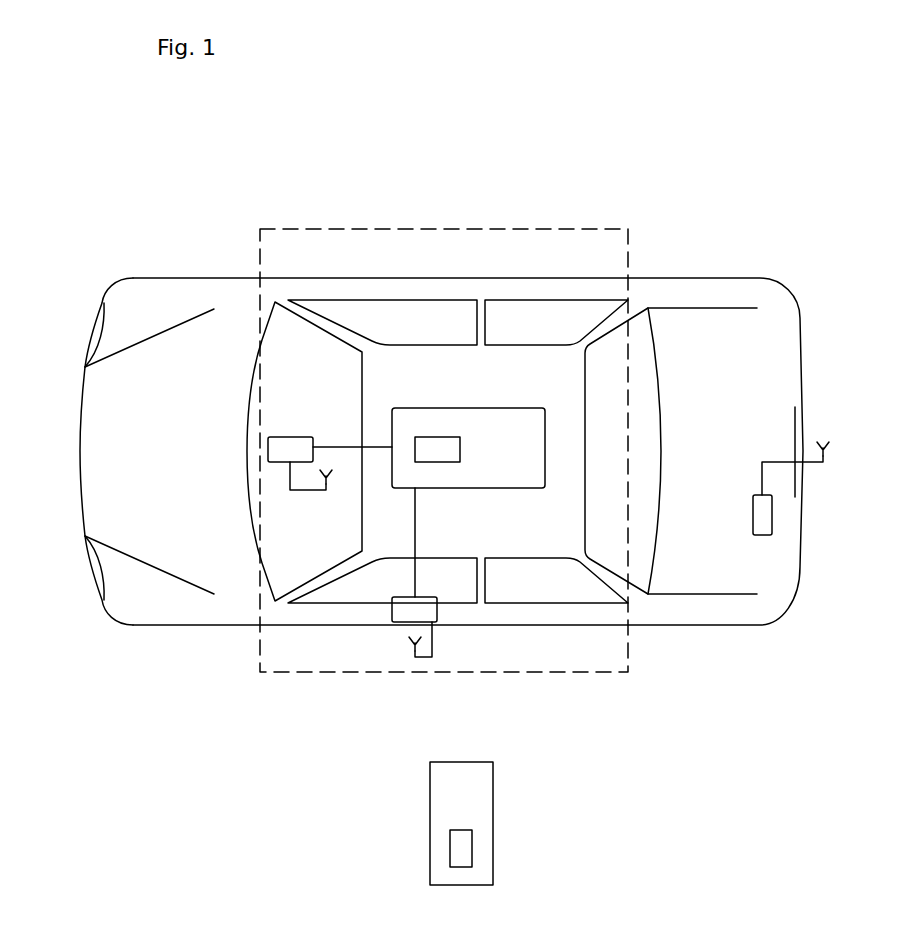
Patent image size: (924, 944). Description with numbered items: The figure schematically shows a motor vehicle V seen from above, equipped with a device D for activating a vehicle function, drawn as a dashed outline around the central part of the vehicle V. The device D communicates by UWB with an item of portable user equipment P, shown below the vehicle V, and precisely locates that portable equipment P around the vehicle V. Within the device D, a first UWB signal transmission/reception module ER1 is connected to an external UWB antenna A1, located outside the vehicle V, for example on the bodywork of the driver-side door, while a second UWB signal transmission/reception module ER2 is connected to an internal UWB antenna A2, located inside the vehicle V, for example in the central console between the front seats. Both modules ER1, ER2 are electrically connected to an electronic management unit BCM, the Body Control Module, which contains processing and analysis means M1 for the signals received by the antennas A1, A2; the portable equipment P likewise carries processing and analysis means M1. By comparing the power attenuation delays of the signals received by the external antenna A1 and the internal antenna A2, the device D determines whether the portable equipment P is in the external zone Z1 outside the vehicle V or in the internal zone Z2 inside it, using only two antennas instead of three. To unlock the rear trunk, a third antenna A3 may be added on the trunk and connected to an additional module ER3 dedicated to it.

The motor vehicle V is at (826, 274).
The device for activating a vehicle function D is at (630, 645).
The electronic management unit (Body Control Module) BCM is at (430, 408).
The processing and analysis means M1 is at (438, 443).
The first UWB signal transmission/reception module ER1 is at (403, 618).
The second UWB signal transmission/reception module ER2 is at (288, 437).
The additional module ER3 is at (766, 525).
The external UWB antenna A1 is at (422, 656).
The internal UWB antenna A2 is at (326, 490).
The third antenna A3 is at (823, 462).
The external zone Z1 is at (461, 771).
The internal zone Z2 is at (518, 381).
The item of portable user equipment P is at (430, 830).